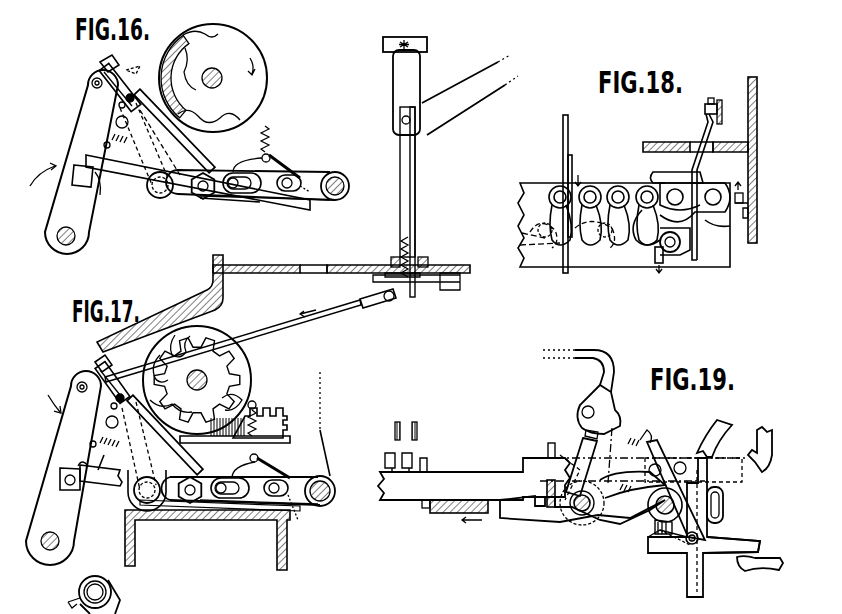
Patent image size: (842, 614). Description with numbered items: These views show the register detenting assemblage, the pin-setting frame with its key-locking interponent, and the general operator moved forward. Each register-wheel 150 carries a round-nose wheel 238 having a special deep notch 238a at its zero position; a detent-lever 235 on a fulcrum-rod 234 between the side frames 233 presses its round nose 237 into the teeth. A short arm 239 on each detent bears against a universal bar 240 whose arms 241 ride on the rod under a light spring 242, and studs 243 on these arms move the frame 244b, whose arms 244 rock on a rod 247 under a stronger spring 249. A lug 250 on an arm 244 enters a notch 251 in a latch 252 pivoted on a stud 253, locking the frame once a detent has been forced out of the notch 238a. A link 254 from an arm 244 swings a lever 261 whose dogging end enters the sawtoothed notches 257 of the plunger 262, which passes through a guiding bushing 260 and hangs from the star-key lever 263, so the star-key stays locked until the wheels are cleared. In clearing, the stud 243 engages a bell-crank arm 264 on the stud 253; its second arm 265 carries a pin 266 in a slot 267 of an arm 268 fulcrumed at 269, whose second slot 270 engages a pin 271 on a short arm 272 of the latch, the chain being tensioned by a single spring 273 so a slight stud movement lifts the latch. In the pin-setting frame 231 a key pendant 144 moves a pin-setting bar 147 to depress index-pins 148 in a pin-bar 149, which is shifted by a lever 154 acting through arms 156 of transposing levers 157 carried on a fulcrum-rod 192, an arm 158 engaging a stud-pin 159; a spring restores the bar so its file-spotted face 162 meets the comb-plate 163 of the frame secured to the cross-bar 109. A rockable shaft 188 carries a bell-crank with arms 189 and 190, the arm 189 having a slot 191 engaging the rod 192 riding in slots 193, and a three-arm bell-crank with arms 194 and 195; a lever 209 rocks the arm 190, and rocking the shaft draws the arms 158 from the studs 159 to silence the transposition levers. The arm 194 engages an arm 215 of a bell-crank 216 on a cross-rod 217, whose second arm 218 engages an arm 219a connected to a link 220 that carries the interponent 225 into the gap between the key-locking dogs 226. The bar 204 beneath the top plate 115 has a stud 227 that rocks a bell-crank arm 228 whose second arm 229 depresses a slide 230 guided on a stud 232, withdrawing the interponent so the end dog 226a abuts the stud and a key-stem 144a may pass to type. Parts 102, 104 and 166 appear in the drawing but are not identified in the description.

In FIG. 18, the frame plate 102 is at (758, 112).
In FIG. 17, the bracket 104 is at (188, 306).
In FIG. 17, the cross-bar 109 is at (288, 558).
In FIG. 17, the top plate 115 is at (306, 275).
In FIG. 18, the top plate 115 is at (656, 143).
In FIG. 18, the pendant 144 is at (563, 131).
In FIG. 18, the key-stem 144a is at (574, 163).
In FIG. 19, the pin-setting bar 147 is at (414, 420).
In FIG. 19, the index-pins 148 is at (407, 453).
In FIG. 17, the pin-bar 149 is at (290, 420).
In FIG. 19, the pin-bar 149 is at (474, 479).
In FIG. 16, the register-wheel 150 is at (248, 38).
In FIG. 17, the register-wheel 150 is at (250, 359).
In FIG. 19, the lever 154 is at (760, 569).
In FIG. 19, the arm 156 is at (742, 540).
In FIG. 19, the transposing lever 157 is at (703, 568).
In FIG. 19, the arm 158 is at (710, 471).
In FIG. 19, the stud-pin 159 is at (682, 462).
In FIG. 19, the file-spotted face 162 is at (546, 492).
In FIG. 19, the comb-plate 163 is at (548, 448).
In FIG. 19, the slide 166 is at (448, 514).
In FIG. 19, the rockable shaft 188 is at (656, 524).
In FIG. 19, the arm 189 is at (668, 485).
In FIG. 19, the arm 190 is at (720, 425).
In FIG. 19, the slot 191 is at (688, 548).
In FIG. 19, the fulcrum-rod 192 is at (699, 539).
In FIG. 19, the slot 193 is at (680, 543).
In FIG. 19, the arm 194 is at (650, 504).
In FIG. 19, the arm 195 is at (724, 503).
In FIG. 18, the bar 204 is at (721, 101).
In FIG. 19, the lever 209 is at (757, 427).
In FIG. 19, the arm 215 is at (604, 522).
In FIG. 19, the bell-crank 216 is at (602, 456).
In FIG. 19, the cross-rod 217 is at (580, 512).
In FIG. 19, the arm 218 is at (574, 460).
In FIG. 19, the arm 219a is at (613, 421).
In FIG. 19, the link 220 is at (582, 360).
In FIG. 18, the interponent 225 is at (657, 266).
In FIG. 18, the key-locking dogs 226 is at (590, 246).
In FIG. 18, the end dog 226a is at (640, 258).
In FIG. 18, the stud 227 is at (705, 110).
In FIG. 18, the bell-crank arm 228 is at (704, 133).
In FIG. 18, the arm 229 is at (663, 173).
In FIG. 18, the slide 230 is at (688, 247).
In FIG. 18, the pin-setting frame 231 is at (536, 184).
In FIG. 18, the stud 232 is at (672, 254).
In FIG. 17, the side frame 233 is at (324, 430).
In FIG. 16, the fulcrum-rod 234 is at (158, 199).
In FIG. 17, the fulcrum-rod 234 is at (135, 506).
In FIG. 16, the detent-lever 235 is at (166, 142).
In FIG. 17, the detent-lever 235 is at (154, 482).
In FIG. 16, the round nose 237 is at (200, 81).
In FIG. 17, the round nose 237 is at (186, 380).
In FIG. 16, the wheel 238 is at (209, 85).
In FIG. 17, the wheel 238 is at (255, 387).
In FIG. 16, the notch 238a is at (189, 74).
In FIG. 17, the notch 238a is at (200, 338).
In FIG. 16, the short arm 239 is at (122, 66).
In FIG. 17, the short arm 239 is at (120, 380).
In FIG. 16, the universal bar 240 is at (104, 60).
In FIG. 17, the universal bar 240 is at (98, 363).
In FIG. 16, the arm 241 is at (110, 98).
In FIG. 17, the arm 241 is at (100, 440).
In FIG. 16, the spring 242 is at (118, 108).
In FIG. 17, the spring 242 is at (123, 440).
In FIG. 16, the stud 243 is at (117, 126).
In FIG. 17, the stud 243 is at (105, 421).
In FIG. 16, the arm 244 is at (68, 144).
In FIG. 17, the arm 244 is at (63, 468).
In FIG. 16, the frame 244b is at (37, 181).
In FIG. 17, the frame 244b is at (41, 398).
In FIG. 16, the rod 247 is at (75, 238).
In FIG. 17, the rod 247 is at (60, 542).
In FIG. 17, the spring 249 is at (101, 475).
In FIG. 16, the lug 250 is at (82, 187).
In FIG. 17, the lug 250 is at (58, 477).
In FIG. 16, the notch 251 is at (102, 192).
In FIG. 17, the notch 251 is at (76, 466).
In FIG. 16, the latch 252 is at (198, 182).
In FIG. 17, the latch 252 is at (103, 486).
In FIG. 16, the stud 253 is at (201, 200).
In FIG. 17, the stud 253 is at (184, 508).
In FIG. 16, the link 254 is at (140, 63).
In FIG. 17, the link 254 is at (325, 318).
In FIG. 17, the sawtoothed notches 257 is at (400, 250).
In FIG. 17, the guiding bushing 260 is at (425, 257).
In FIG. 17, the lever 261 is at (388, 266).
In FIG. 17, the plunger 262 is at (416, 169).
In FIG. 17, the star-key lever 263 is at (456, 90).
In FIG. 16, the bell-crank arm 264 is at (190, 156).
In FIG. 17, the bell-crank arm 264 is at (165, 435).
In FIG. 16, the arm 265 is at (282, 162).
In FIG. 17, the arm 265 is at (272, 470).
In FIG. 16, the pin 266 is at (298, 178).
In FIG. 17, the pin 266 is at (282, 482).
In FIG. 16, the slot 267 is at (314, 189).
In FIG. 17, the slot 267 is at (307, 516).
In FIG. 16, the arm 268 is at (308, 202).
In FIG. 17, the arm 268 is at (260, 506).
In FIG. 16, the fulcrum 269 is at (340, 174).
In FIG. 17, the fulcrum 269 is at (334, 502).
In FIG. 16, the slot 270 is at (248, 190).
In FIG. 17, the slot 270 is at (240, 500).
In FIG. 16, the pin 271 is at (238, 174).
In FIG. 17, the pin 271 is at (232, 478).
In FIG. 16, the short arm 272 is at (236, 203).
In FIG. 17, the short arm 272 is at (205, 512).
In FIG. 16, the spring 273 is at (268, 130).
In FIG. 17, the spring 273 is at (258, 410).